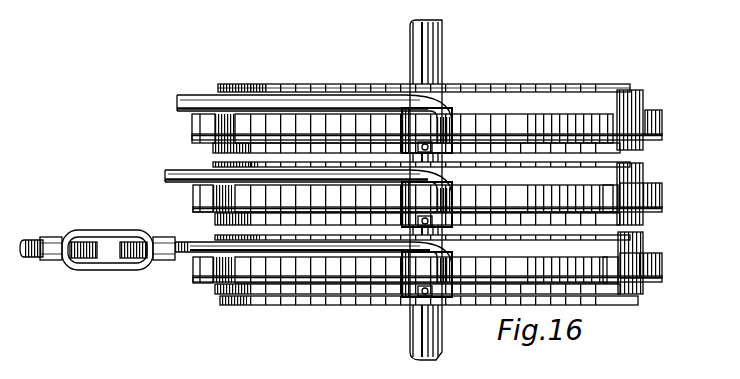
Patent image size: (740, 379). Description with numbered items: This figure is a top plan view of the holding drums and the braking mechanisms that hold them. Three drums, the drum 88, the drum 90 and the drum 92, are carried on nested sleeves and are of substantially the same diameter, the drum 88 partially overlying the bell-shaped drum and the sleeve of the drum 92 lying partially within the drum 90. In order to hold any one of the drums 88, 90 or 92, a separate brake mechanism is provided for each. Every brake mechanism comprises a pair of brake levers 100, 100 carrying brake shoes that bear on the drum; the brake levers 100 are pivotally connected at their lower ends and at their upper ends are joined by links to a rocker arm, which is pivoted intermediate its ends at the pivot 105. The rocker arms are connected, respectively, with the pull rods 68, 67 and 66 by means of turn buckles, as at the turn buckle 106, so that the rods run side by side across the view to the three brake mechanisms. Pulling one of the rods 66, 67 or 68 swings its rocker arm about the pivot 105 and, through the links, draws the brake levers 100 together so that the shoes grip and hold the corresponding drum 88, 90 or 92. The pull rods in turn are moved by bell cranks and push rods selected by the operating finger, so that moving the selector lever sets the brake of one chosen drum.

The pull rod 66 is at (358, 100).
The pull rod 67 is at (168, 181).
The pull rod 68 is at (342, 249).
The drum 88 is at (303, 305).
The drum 90 is at (590, 180).
The drum 92 is at (587, 100).
The brake lever 100 is at (645, 122).
The pivot 105 is at (423, 333).
The turn buckle 106 is at (106, 265).